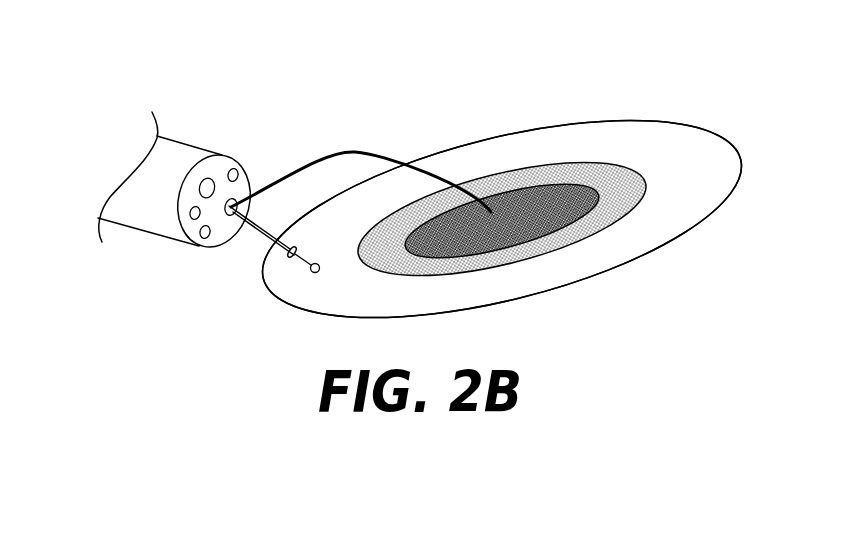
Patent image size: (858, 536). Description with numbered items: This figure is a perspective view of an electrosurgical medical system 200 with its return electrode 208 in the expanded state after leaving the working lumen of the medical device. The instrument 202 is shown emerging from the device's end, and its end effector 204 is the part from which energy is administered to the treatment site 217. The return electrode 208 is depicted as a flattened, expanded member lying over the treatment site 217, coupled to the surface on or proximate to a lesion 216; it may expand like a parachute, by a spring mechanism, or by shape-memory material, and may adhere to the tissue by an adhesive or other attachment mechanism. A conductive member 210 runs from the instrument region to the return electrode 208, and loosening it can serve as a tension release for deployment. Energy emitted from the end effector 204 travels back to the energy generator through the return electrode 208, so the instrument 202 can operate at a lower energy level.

The medical system 200 is at (637, 79).
The instrument 202 is at (218, 247).
The end effector 204 is at (170, 160).
The return electrode 208 is at (565, 221).
The conductive member 210 is at (342, 150).
The lesion 216 is at (630, 190).
The treatment site 217 is at (542, 122).